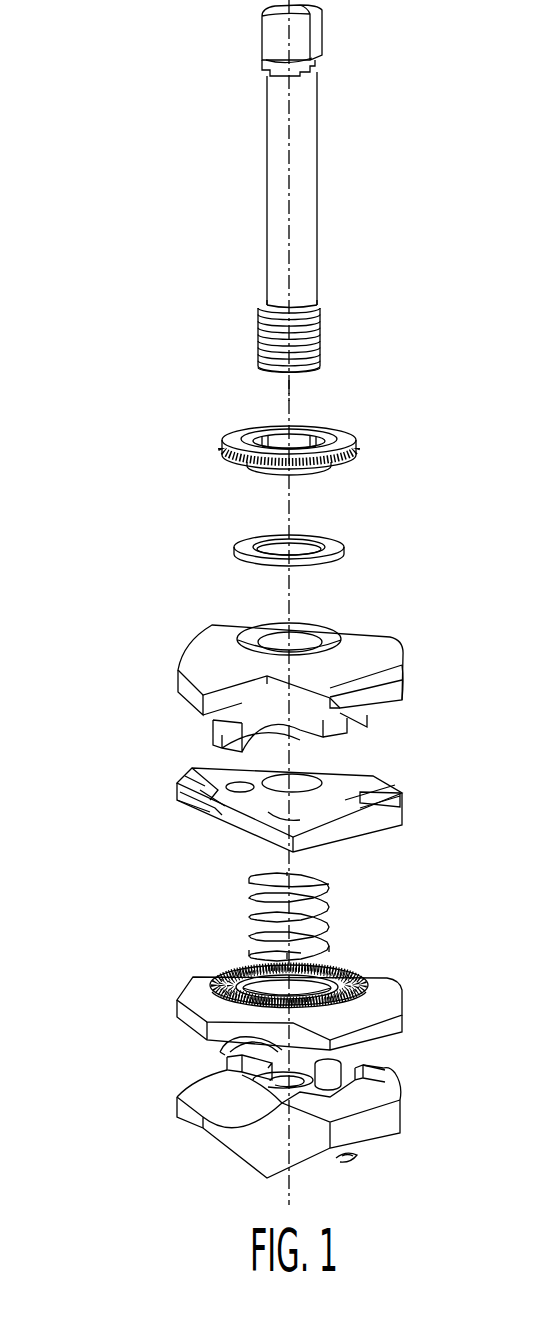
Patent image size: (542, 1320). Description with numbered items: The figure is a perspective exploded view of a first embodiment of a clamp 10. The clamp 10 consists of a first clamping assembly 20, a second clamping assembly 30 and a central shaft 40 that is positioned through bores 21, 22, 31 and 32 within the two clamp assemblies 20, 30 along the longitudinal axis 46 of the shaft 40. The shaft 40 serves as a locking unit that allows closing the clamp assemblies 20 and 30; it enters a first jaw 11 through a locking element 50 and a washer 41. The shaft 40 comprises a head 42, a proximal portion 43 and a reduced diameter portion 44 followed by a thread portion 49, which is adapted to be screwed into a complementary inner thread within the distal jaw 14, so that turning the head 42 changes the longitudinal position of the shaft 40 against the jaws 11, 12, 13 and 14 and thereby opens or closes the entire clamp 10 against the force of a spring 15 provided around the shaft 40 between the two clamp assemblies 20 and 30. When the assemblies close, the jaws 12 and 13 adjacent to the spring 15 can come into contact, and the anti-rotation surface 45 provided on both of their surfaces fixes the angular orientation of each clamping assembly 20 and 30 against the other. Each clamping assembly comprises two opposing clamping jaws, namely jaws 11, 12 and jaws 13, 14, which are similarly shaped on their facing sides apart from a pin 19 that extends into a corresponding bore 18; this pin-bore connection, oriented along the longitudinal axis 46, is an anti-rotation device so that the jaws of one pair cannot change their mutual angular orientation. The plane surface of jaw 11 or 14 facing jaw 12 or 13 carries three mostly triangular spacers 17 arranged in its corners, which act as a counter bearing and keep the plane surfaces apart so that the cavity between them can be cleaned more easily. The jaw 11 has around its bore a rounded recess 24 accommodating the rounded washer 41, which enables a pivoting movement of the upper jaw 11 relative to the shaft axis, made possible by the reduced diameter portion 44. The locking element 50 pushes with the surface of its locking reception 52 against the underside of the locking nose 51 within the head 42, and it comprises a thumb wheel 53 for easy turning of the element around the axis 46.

The clamp 10 is at (141, 541).
The first jaw 11 is at (324, 661).
The jaw 12 is at (304, 813).
The jaw 13 is at (270, 1006).
The distal jaw 14 is at (316, 1123).
The spring 15 is at (327, 895).
The spacers 17 is at (283, 1072).
The bore 18 is at (180, 808).
The pin 19 is at (338, 1072).
The first clamping assembly 20 is at (91, 736).
The bore 21 is at (308, 643).
The bore 22 is at (303, 782).
The rounded recess 24 is at (250, 637).
The second clamping assembly 30 is at (152, 1057).
The bore 31 is at (310, 972).
The bore 32 is at (262, 1037).
The central shaft 40 is at (307, 219).
The washer 41 is at (335, 542).
The head 42 is at (315, 43).
The proximal portion 43 is at (329, 188).
The reduced diameter portion 44 is at (317, 277).
The anti-rotation surface 45 is at (225, 983).
The longitudinal axis 46 is at (287, 402).
The thread portion 49 is at (323, 336).
The locking element 50 is at (347, 440).
The locking nose 51 is at (186, 762).
The locking reception 52 is at (370, 788).
The thumb wheel 53 is at (223, 810).